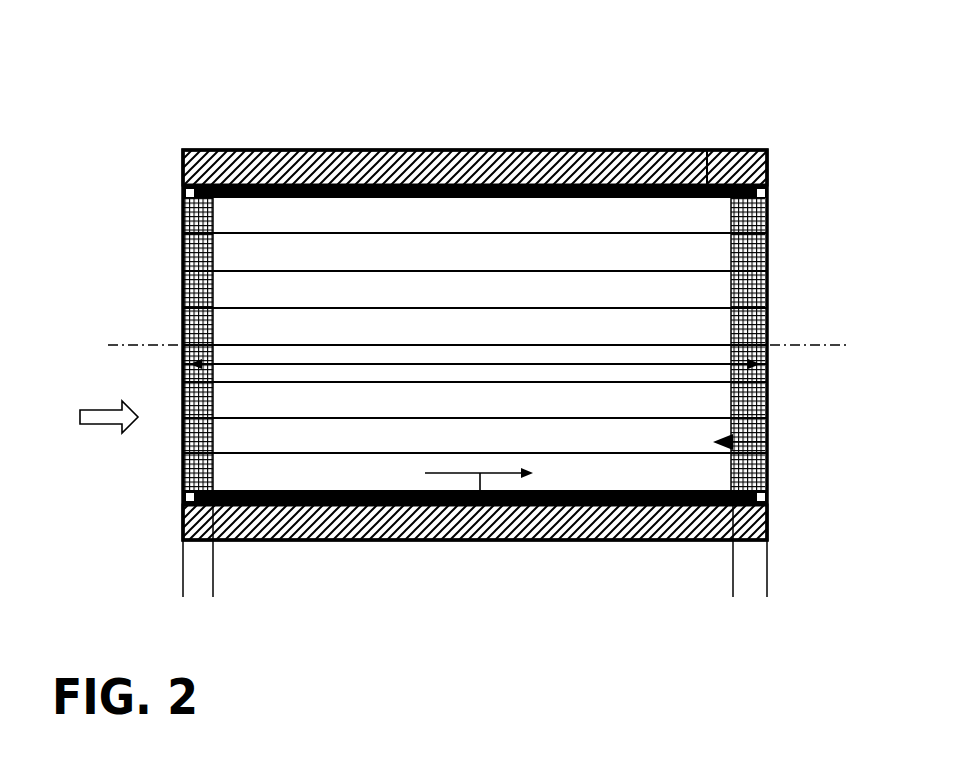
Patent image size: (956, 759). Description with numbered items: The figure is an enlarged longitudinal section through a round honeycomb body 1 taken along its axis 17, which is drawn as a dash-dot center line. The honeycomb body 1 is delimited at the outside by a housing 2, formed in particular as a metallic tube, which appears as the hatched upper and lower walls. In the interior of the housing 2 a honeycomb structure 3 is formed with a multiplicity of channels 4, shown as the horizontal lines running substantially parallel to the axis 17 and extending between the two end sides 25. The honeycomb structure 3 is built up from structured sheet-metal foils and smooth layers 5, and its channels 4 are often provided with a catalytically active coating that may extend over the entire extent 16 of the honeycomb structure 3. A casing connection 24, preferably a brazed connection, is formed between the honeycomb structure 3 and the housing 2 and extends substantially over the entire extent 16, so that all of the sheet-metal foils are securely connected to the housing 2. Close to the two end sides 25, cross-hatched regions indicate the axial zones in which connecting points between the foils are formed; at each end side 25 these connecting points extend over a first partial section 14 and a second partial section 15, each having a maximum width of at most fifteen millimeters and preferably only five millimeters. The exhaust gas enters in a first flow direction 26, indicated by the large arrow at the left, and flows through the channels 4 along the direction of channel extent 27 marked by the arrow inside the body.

The honeycomb body 1 is at (757, 440).
The housing 2 is at (400, 170).
The honeycomb structure 3 is at (293, 218).
The channels 4 is at (618, 465).
The smooth layer 5 is at (693, 238).
The first partial section 14 is at (270, 573).
The second partial section 15 is at (825, 573).
The extent of the honeycomb structure 16 is at (370, 365).
The axis 17 is at (120, 345).
The casing connection 24 is at (552, 185).
The end sides 25 is at (183, 247).
The first flow direction 26 is at (105, 417).
The direction of channel extent 27 is at (485, 505).